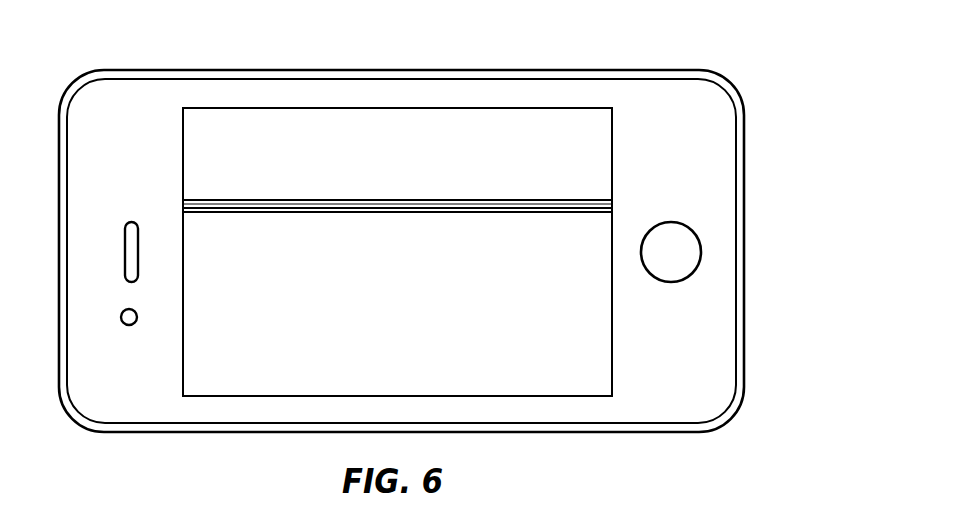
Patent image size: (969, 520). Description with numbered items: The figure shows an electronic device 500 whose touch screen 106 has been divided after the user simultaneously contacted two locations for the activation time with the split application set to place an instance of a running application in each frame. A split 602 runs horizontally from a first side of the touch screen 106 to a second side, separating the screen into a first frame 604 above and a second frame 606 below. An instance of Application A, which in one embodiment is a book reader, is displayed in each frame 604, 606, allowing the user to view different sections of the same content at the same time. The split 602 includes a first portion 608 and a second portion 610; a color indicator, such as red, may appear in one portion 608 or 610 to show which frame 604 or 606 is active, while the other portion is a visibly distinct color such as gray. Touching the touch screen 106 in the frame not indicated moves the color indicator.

The electronic device 500 is at (603, 71).
The touch screen 106 is at (613, 152).
The first frame 604 is at (193, 158).
The second frame 606 is at (195, 377).
The split 602 is at (397, 204).
The first portion of the split 608 is at (407, 202).
The second portion of the split 610 is at (413, 208).